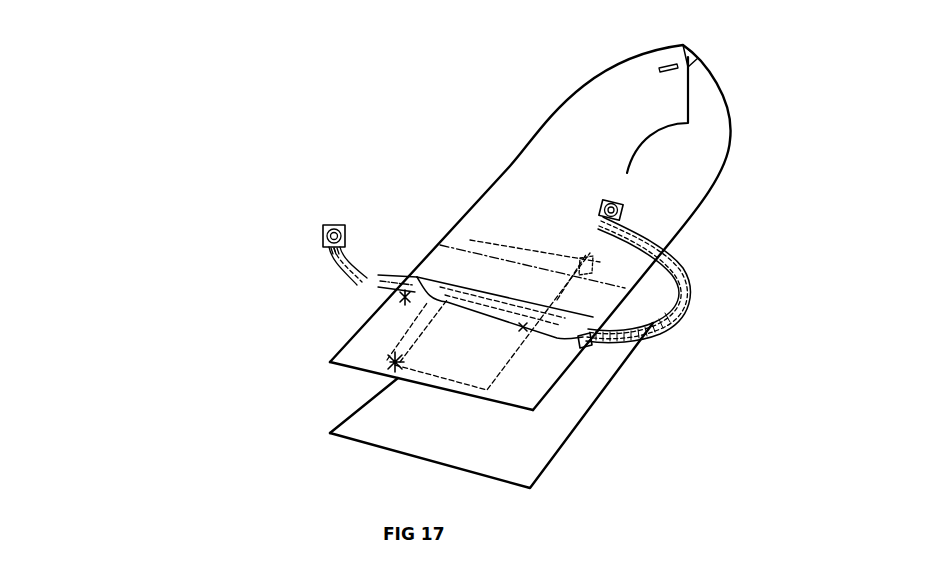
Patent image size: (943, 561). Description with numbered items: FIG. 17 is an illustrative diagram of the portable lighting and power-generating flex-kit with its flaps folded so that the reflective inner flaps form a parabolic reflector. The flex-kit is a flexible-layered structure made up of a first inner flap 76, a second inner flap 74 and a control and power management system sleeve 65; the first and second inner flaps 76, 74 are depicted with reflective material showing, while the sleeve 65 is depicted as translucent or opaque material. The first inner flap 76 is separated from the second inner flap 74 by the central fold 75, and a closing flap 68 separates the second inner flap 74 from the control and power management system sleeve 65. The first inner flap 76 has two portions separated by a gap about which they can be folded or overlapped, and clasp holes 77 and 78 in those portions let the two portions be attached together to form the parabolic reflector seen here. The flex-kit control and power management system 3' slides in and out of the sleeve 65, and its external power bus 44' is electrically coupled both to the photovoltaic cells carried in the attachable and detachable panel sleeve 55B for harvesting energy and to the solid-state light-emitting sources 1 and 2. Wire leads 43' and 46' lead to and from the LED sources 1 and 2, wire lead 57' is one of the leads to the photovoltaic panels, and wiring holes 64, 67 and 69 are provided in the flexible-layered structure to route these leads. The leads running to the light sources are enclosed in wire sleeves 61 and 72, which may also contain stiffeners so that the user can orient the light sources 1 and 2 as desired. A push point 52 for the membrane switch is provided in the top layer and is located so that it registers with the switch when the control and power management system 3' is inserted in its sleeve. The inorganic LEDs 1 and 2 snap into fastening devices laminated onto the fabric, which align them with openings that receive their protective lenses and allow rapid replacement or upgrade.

The solid-state light-emitting source 1 is at (323, 240).
The solid-state light-emitting source 2 is at (627, 216).
The base plate 3' is at (491, 405).
The first strap 43' is at (323, 276).
The second strap 44' is at (668, 280).
The strap guide 46' is at (568, 292).
The push point 52 is at (397, 368).
The lower plate 55B is at (383, 414).
The anchor point 57' is at (569, 243).
The wire sleeve 61 is at (670, 273).
The wiring hole 64 is at (583, 347).
The control and power management system sleeve 65 is at (528, 380).
The wiring hole 67 is at (520, 328).
The closing flap 68 is at (460, 307).
The wiring hole 69 is at (403, 300).
The wire sleeve 72 is at (338, 257).
The second inner flap 74 is at (460, 257).
The central fold 75 is at (537, 265).
The first inner flap 76 is at (543, 160).
The clasp hole 77 is at (660, 66).
The clasp hole 78 is at (697, 62).